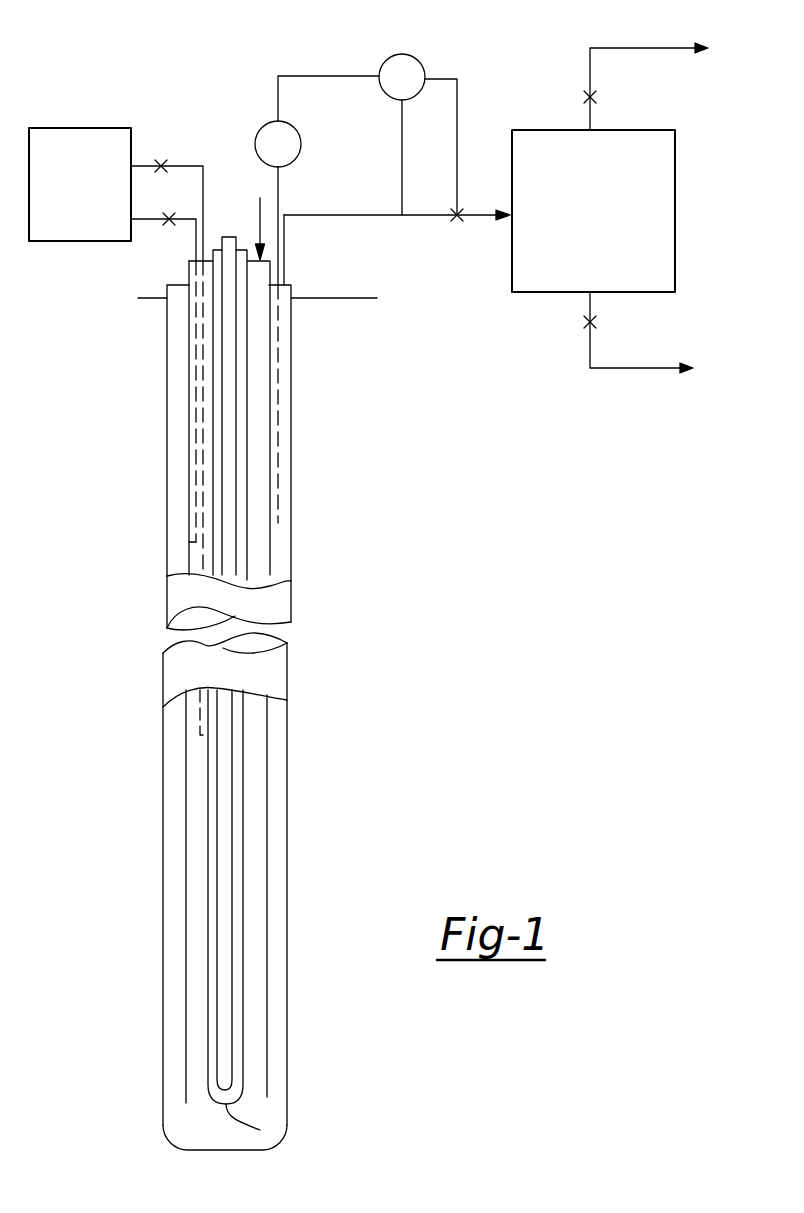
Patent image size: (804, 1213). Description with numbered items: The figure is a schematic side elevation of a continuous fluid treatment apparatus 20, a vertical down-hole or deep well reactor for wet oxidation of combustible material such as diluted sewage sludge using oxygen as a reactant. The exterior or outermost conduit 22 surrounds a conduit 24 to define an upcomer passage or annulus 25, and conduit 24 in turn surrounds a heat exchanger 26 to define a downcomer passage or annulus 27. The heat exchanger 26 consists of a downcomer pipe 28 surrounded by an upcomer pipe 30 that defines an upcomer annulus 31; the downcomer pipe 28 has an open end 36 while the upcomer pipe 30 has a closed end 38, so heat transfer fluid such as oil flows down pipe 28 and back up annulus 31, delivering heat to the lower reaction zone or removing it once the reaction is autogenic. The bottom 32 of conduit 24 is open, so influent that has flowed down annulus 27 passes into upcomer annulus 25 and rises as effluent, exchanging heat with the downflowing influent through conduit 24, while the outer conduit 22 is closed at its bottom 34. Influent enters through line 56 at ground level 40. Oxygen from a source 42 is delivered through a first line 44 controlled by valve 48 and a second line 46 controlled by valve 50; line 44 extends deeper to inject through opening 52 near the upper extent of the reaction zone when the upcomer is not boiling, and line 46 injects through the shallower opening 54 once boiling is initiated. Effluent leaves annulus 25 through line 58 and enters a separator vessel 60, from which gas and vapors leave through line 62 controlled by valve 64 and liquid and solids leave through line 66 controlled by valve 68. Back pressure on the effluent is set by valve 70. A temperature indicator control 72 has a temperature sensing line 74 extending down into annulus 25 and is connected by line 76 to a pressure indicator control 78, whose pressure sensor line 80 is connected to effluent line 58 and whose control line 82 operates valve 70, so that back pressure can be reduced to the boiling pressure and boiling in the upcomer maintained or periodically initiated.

The continuous fluid treatment apparatus 20 is at (218, 709).
The exterior conduit 22 is at (207, 605).
The conduit 24 is at (270, 570).
The upcomer passage 25 is at (180, 818).
The heat exchanger 26 is at (250, 737).
The downcomer passage 27 is at (197, 918).
The downcomer pipe 28 is at (223, 795).
The upcomer pipe 30 is at (243, 933).
The upcomer annulus 31 is at (213, 1012).
The bottom of conduit 32 is at (198, 1103).
The bottom of vessel 34 is at (223, 1150).
The open end 36 is at (237, 1095).
The closed end 38 is at (260, 1130).
The ground level 40 is at (353, 298).
The source of oxygen 42 is at (85, 158).
The first line 44 is at (205, 188).
The line 46 is at (195, 240).
The valve 48 is at (187, 140).
The valve 50 is at (168, 214).
The opening 52 is at (195, 735).
The opening 54 is at (186, 542).
The line 56 is at (258, 215).
The line 58 is at (358, 215).
The separator vessel 60 is at (568, 275).
The line 62 is at (590, 67).
The valve 64 is at (598, 97).
The line 66 is at (590, 362).
The valve 68 is at (597, 325).
The valve 70 is at (457, 222).
The temperature indicator control 72 is at (287, 120).
The temperature sensing line 74 is at (277, 378).
The line 76 is at (302, 68).
The pressure indicator control 78 is at (388, 56).
The pressure sensor line 80 is at (402, 170).
The control line 82 is at (457, 145).